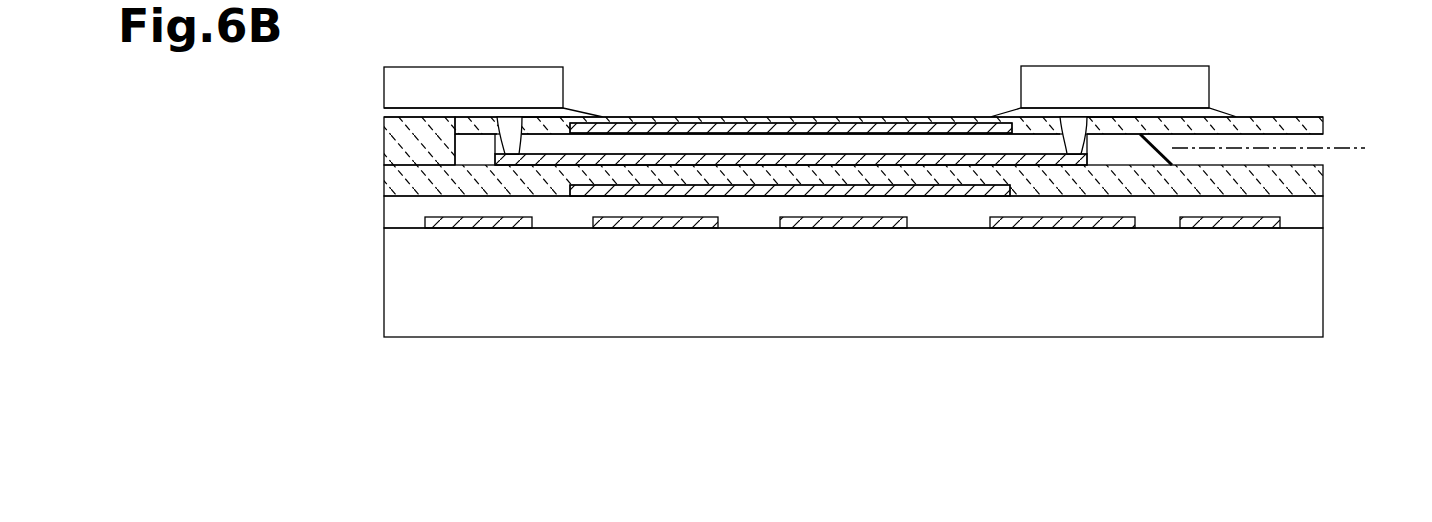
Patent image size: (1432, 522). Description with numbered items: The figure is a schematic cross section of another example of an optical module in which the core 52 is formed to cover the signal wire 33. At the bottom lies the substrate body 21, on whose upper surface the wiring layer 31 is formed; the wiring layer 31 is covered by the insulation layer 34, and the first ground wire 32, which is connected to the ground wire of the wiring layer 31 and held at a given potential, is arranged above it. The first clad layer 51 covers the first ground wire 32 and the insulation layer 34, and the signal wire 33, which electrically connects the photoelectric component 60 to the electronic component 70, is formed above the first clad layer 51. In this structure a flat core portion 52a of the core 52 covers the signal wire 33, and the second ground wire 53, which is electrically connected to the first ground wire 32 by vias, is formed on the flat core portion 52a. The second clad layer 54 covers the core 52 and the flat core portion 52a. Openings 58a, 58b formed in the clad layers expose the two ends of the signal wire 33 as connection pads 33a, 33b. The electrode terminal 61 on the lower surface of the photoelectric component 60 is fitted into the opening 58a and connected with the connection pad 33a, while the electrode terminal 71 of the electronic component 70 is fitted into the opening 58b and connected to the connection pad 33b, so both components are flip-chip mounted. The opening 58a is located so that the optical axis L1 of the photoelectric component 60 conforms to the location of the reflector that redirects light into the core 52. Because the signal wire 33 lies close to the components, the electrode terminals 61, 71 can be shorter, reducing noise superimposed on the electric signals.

The substrate body 21 is at (1324, 260).
The wiring layer 31 is at (1235, 229).
The first ground wire 32 is at (950, 197).
The signal wire 33 is at (705, 154).
The connection pad 33a is at (1077, 152).
The connection pad 33b is at (513, 152).
The insulation layer 34 is at (1324, 213).
The first clad layer 51 is at (1324, 183).
The core 52 is at (1313, 142).
The flat core portion 52a is at (772, 147).
The second ground wire 53 is at (862, 123).
The second clad layer 54 is at (1305, 117).
The opening 58a is at (1066, 124).
The opening 58b is at (500, 124).
The photoelectric component 60 is at (1188, 66).
The electrode terminal 61 is at (1087, 118).
The electronic component 70 is at (410, 67).
The electrode terminal 71 is at (522, 118).
The optical axis L1 is at (1365, 149).